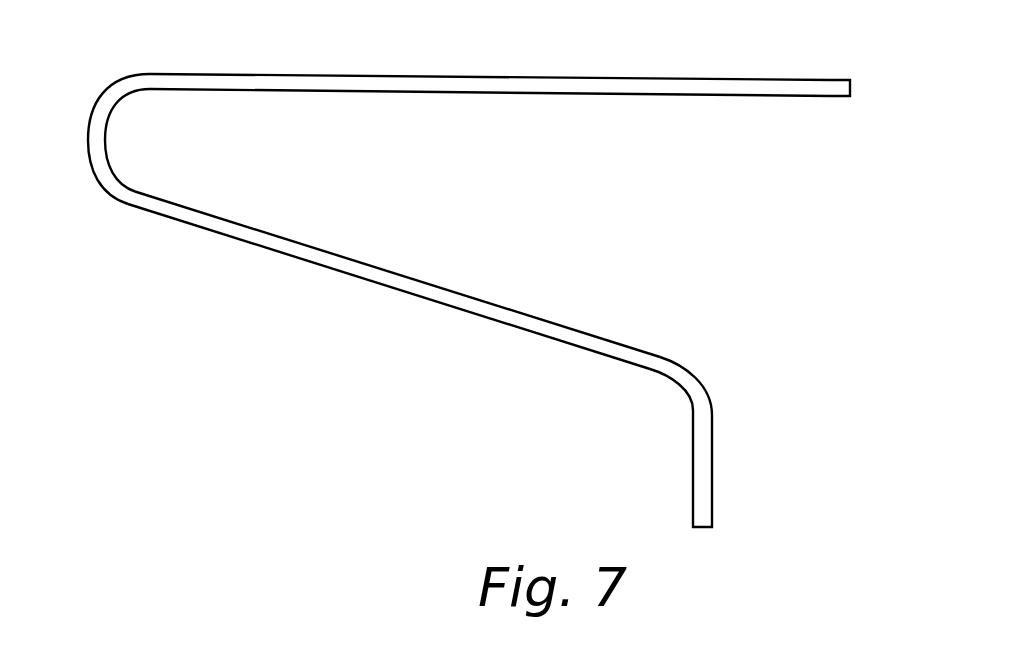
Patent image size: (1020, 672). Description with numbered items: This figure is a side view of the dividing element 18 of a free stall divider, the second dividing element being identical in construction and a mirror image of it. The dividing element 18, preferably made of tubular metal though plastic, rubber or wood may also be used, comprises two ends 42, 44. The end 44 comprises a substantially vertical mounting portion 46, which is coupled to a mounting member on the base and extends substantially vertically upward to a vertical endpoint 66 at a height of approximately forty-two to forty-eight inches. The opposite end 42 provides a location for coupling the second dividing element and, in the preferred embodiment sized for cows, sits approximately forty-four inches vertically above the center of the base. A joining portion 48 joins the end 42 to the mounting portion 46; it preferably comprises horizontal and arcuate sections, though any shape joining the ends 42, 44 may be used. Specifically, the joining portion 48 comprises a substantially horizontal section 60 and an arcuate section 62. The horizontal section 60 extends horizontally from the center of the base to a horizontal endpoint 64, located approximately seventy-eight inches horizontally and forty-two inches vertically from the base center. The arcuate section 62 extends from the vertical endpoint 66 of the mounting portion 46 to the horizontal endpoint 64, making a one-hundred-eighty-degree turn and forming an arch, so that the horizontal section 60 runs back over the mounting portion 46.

The dividing element 18 is at (481, 270).
The end 42 is at (851, 86).
The end 44 is at (697, 530).
The mounting portion 46 is at (714, 473).
The joining portion 48 is at (113, 197).
The substantially horizontal section 60 is at (415, 76).
The arcuate section 62 is at (405, 292).
The horizontal endpoint 64 is at (160, 74).
The vertical endpoint 66 is at (707, 400).